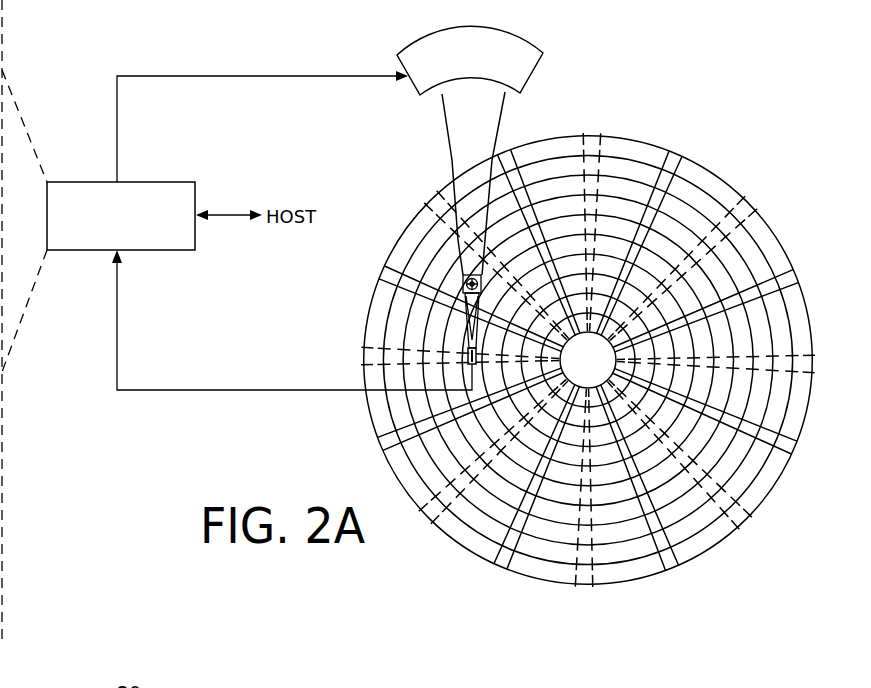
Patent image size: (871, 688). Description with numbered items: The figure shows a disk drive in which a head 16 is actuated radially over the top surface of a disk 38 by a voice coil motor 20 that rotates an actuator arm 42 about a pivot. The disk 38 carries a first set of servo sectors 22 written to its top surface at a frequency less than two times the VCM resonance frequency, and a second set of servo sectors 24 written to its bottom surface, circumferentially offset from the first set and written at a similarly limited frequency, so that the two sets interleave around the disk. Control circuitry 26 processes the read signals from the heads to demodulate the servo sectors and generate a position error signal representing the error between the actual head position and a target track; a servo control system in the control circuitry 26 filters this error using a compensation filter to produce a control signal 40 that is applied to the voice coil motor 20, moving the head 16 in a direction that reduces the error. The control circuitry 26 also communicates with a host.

The head 16 is at (458, 349).
The voice coil motor 20 is at (416, 89).
The first set of servo sectors 22 is at (510, 156).
The second set of servo sectors 24 is at (594, 137).
The control circuitry 26 is at (161, 182).
The disk 38 is at (733, 178).
The control signal 40 is at (117, 108).
The actuator arm 42 is at (452, 139).